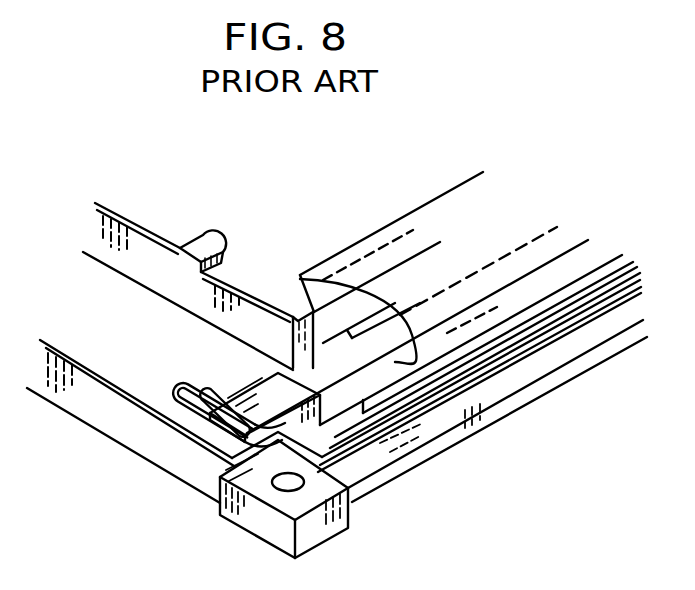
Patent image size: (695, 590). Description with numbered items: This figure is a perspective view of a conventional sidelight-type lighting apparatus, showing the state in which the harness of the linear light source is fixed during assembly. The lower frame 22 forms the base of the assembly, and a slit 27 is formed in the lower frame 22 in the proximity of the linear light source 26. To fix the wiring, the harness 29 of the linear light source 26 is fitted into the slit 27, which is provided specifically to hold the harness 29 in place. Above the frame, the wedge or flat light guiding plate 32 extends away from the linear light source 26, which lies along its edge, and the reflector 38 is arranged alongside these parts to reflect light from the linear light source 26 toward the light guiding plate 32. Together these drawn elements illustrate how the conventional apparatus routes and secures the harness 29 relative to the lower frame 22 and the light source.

The lower frame 22 is at (520, 397).
The linear light source 26 is at (330, 358).
The slit 27 is at (542, 323).
The harness 29 is at (197, 418).
The light guiding plate 32 is at (348, 310).
The reflector 38 is at (445, 215).